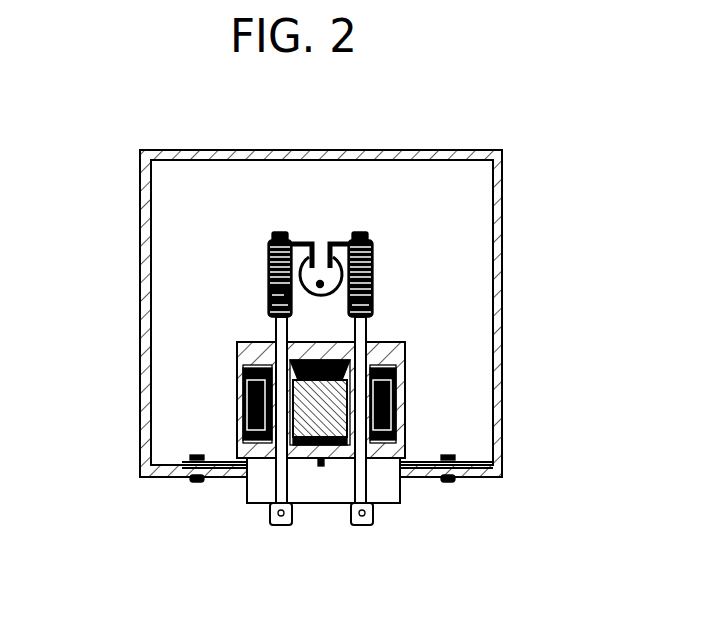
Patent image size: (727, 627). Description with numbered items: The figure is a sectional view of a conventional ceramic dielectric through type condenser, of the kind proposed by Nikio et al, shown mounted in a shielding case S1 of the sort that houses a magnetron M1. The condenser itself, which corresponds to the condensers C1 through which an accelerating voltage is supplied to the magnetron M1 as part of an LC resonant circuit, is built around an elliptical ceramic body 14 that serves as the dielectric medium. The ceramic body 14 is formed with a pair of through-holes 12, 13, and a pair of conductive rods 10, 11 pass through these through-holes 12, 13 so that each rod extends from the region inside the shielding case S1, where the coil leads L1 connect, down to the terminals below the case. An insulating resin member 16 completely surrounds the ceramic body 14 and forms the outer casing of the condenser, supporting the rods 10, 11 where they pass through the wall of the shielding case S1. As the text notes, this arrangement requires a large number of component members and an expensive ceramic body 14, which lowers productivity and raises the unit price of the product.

The conductive rod 10 is at (283, 478).
The conductive rod 11 is at (364, 478).
The through-hole 12 is at (246, 425).
The through-hole 13 is at (398, 412).
The ceramic body 14 is at (258, 403).
The insulating resin member 16 is at (405, 352).
The inductance coils L1 is at (270, 264).
The magnetron M1 is at (320, 257).
The shielding case S1 is at (503, 240).
The condenser C1 is at (240, 488).